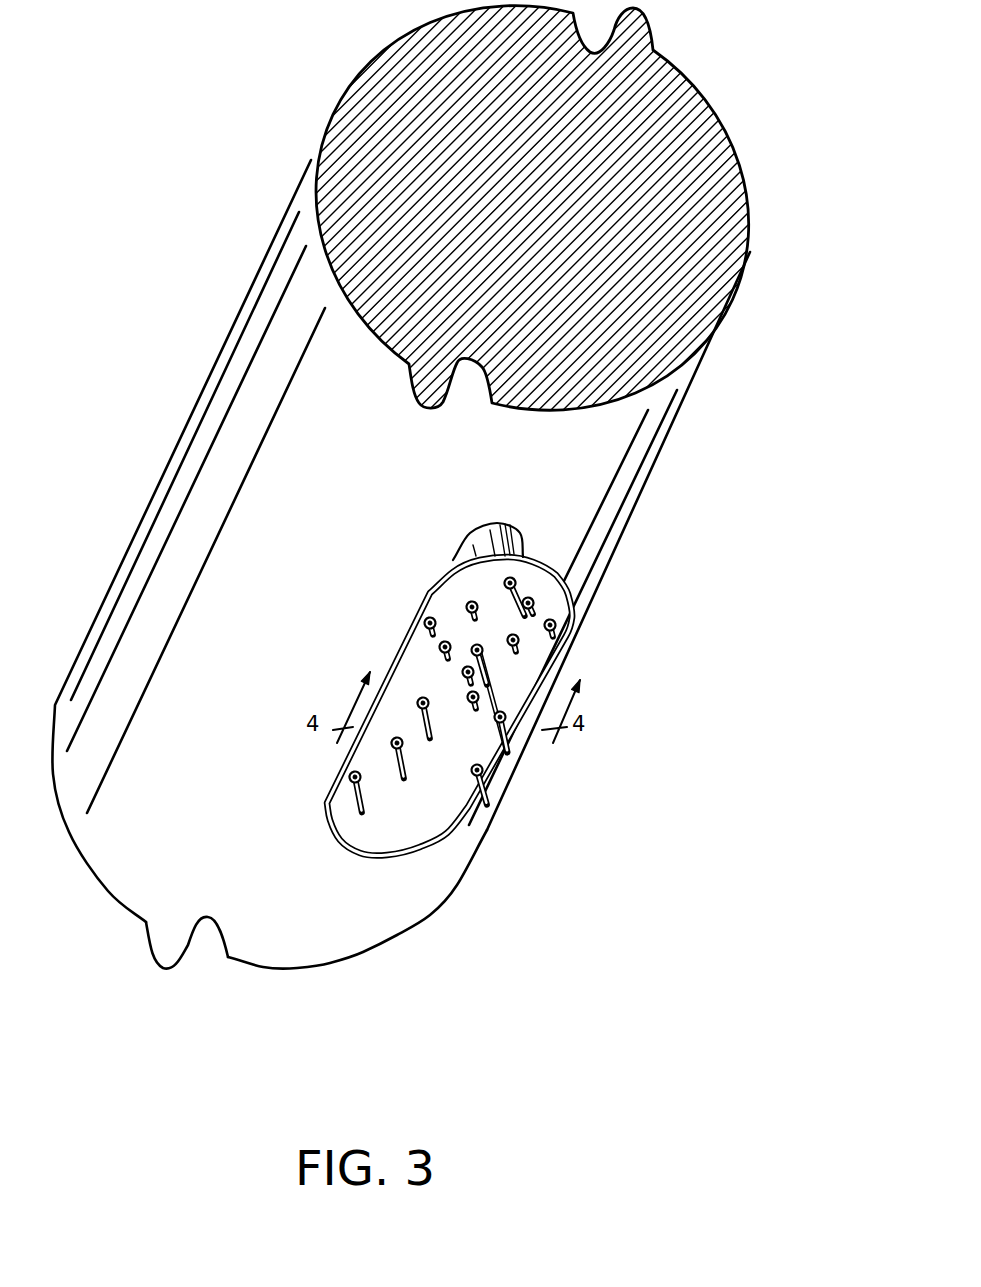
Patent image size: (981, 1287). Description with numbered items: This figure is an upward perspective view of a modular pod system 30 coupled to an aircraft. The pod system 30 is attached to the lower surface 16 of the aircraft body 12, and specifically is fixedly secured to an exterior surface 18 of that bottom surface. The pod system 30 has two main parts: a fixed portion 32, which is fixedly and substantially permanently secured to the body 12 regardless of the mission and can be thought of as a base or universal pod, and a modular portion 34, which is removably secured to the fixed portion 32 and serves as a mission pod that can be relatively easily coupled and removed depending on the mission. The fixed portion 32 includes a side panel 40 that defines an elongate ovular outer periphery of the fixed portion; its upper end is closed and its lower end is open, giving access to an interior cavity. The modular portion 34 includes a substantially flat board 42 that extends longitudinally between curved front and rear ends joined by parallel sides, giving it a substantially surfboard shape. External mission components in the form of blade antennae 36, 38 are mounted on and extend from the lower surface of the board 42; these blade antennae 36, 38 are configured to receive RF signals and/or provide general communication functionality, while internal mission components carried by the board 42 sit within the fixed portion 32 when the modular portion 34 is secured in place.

The aircraft body 12 is at (287, 260).
The lower surface 16 is at (297, 943).
The exterior surface 18 is at (146, 867).
The pod system 30 is at (433, 857).
The fixed portion 32 is at (520, 523).
The modular portion 34 is at (400, 860).
The blade antennae 36 is at (505, 722).
The blade antennae 38 is at (548, 647).
The side panel 40 is at (522, 548).
The board 42 is at (465, 820).